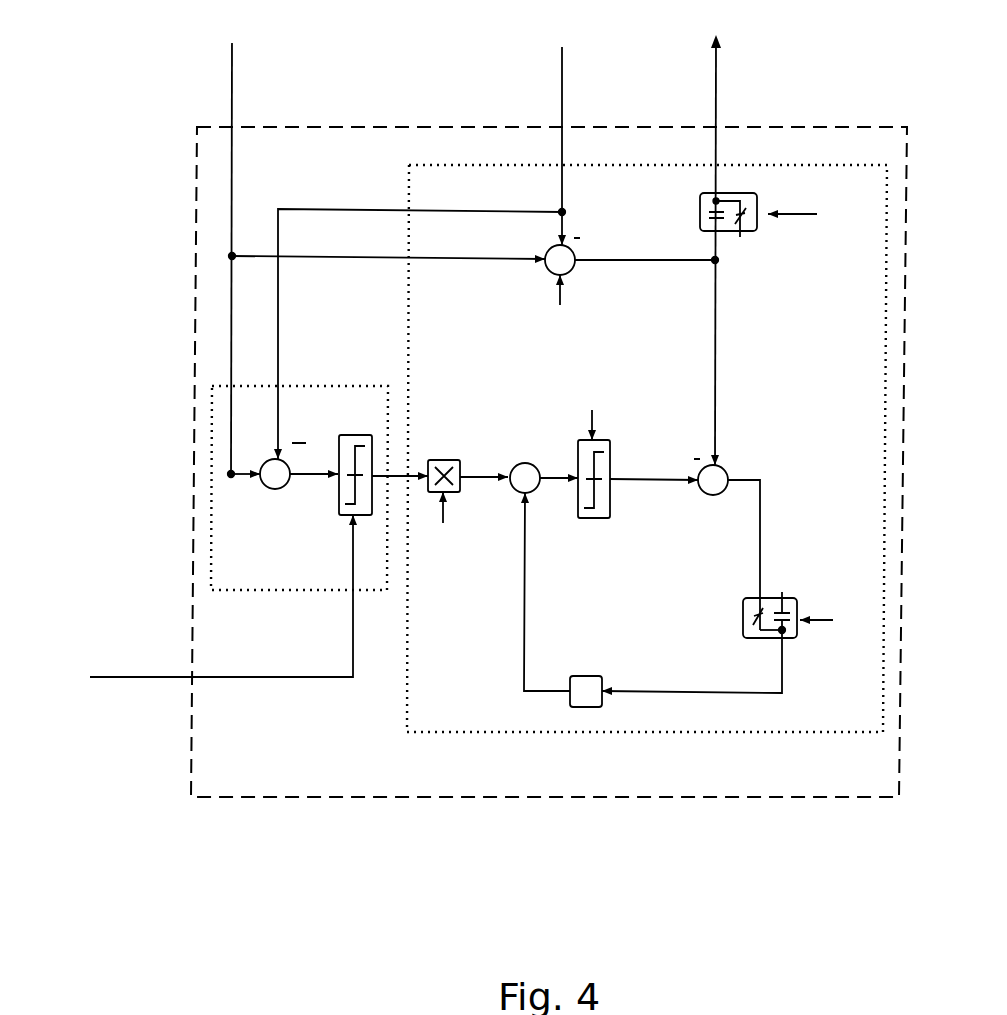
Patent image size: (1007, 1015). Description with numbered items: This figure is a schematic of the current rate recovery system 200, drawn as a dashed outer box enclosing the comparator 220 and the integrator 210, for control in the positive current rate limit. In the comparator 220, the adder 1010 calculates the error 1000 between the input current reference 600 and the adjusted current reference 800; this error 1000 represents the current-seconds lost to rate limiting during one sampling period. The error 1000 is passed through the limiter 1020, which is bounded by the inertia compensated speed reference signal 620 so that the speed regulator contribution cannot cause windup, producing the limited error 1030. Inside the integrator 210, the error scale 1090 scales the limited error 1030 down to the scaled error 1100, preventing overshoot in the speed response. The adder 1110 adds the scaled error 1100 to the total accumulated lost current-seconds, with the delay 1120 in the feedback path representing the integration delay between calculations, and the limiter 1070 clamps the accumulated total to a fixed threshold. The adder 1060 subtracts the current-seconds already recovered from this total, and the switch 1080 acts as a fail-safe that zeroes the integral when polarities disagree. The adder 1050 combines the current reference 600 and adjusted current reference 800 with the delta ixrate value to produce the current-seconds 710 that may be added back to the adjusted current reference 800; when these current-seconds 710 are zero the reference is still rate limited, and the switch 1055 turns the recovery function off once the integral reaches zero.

The current rate recovery system 200 is at (857, 127).
The integrator 210 is at (410, 190).
The comparator 220 is at (298, 386).
The current reference 600 is at (232, 91).
The inertia compensated speed reference signal 620 is at (135, 677).
The current-seconds 710 is at (640, 257).
The adjusted current reference 800 is at (562, 107).
The error 1000 is at (307, 478).
The adder 1010 is at (262, 487).
The limiter 1020 is at (347, 435).
The limited error 1030 is at (415, 472).
The adder 1050 is at (567, 277).
The switch 1055 is at (756, 234).
The adder 1060 is at (720, 465).
The limiter 1070 is at (588, 518).
The switch 1080 is at (797, 598).
The error scale 1090 is at (443, 460).
The scaled error 1100 is at (480, 480).
The adder 1110 is at (525, 460).
The delay 1120 is at (588, 676).